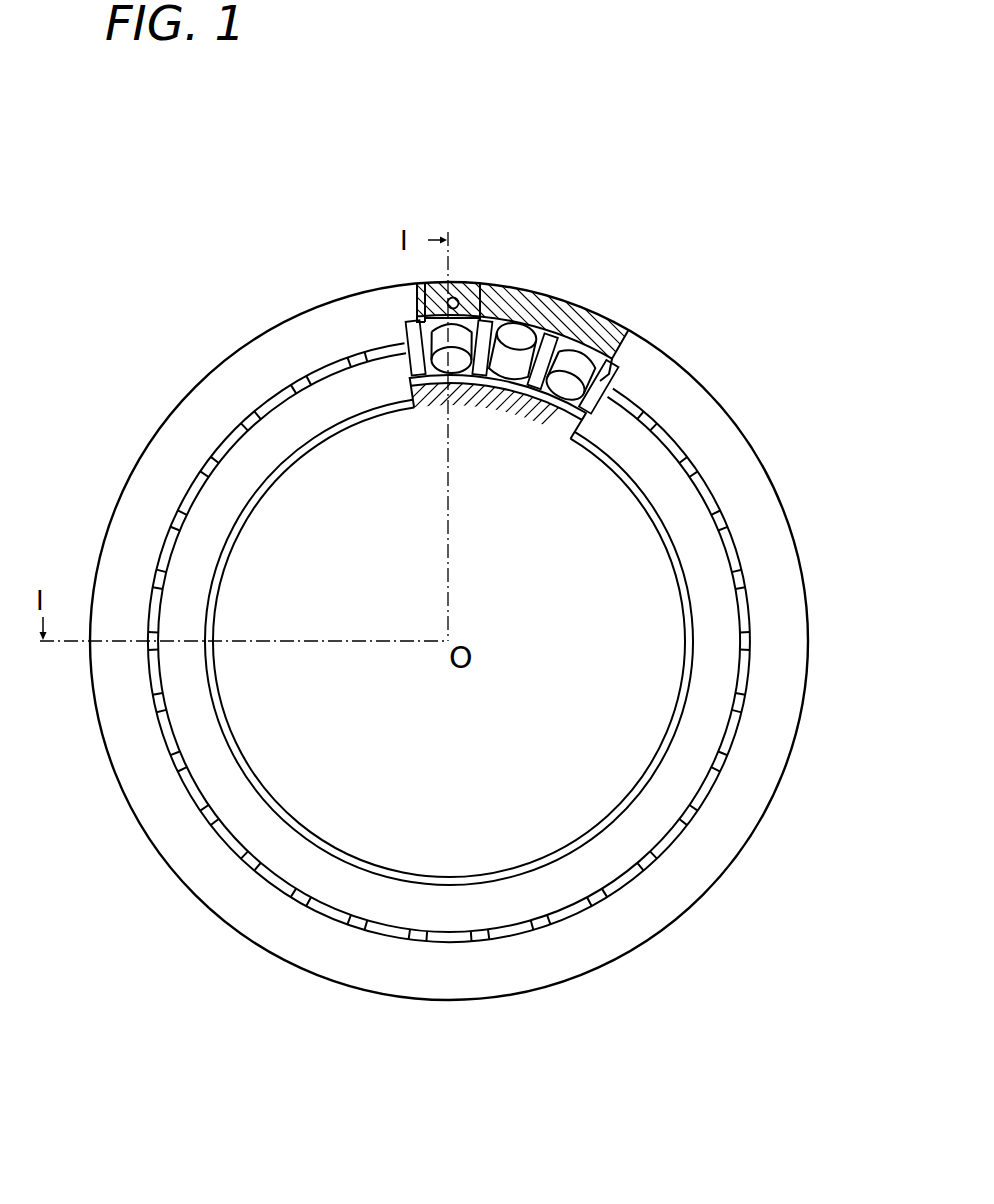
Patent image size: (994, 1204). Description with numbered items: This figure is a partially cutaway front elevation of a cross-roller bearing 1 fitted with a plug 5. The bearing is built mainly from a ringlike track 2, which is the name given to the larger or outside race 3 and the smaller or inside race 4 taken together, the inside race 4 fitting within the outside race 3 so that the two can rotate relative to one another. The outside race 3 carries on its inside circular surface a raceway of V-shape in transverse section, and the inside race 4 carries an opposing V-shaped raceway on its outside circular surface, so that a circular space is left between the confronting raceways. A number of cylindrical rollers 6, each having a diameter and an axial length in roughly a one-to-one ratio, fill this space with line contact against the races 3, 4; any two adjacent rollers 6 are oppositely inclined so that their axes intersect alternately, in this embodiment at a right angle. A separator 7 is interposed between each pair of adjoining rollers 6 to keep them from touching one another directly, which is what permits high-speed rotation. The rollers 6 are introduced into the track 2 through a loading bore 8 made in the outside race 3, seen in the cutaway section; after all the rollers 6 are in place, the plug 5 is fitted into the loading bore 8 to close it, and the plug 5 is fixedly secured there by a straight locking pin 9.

The cross-roller bearing 1 is at (735, 398).
The ringlike track 2 is at (747, 795).
The outside race 3 is at (587, 333).
The inside race 4 is at (287, 447).
The plug 5 is at (468, 298).
The roller 6 is at (613, 330).
The separator 7 is at (556, 340).
The loading bore 8 is at (474, 290).
The locking pin 9 is at (416, 296).